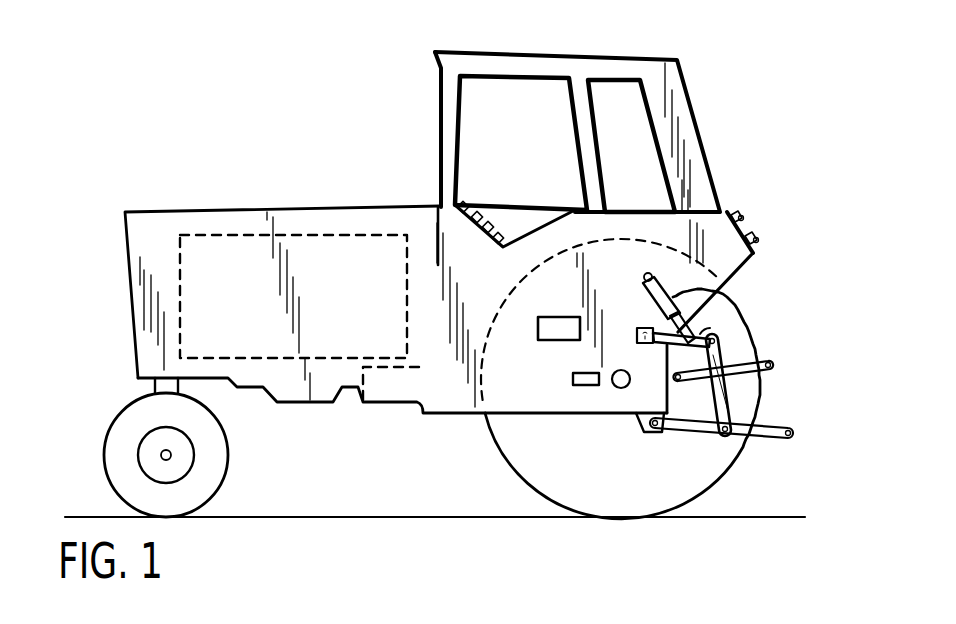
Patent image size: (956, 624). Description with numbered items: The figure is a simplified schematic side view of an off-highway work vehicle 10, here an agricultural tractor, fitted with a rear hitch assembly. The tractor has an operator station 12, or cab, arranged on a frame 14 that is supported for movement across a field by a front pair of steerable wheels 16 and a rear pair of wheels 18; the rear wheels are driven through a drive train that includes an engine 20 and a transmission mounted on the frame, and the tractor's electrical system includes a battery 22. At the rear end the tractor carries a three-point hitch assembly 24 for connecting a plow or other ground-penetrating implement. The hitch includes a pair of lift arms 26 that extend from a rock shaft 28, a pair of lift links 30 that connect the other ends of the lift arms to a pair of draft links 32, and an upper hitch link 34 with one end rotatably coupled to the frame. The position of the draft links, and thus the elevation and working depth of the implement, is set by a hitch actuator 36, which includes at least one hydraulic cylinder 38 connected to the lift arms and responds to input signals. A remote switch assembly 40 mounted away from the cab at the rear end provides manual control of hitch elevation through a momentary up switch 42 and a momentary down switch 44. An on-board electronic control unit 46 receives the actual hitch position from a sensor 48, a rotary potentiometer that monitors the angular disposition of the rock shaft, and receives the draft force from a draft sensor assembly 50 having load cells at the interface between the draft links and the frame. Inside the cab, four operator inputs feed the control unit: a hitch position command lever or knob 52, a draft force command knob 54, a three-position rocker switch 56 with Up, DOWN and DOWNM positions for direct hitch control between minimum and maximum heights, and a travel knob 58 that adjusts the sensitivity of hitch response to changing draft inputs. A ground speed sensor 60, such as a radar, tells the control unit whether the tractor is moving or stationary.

The off-highway work vehicle 10 is at (227, 198).
The operator station 12 is at (547, 92).
The frame 14 is at (432, 353).
The front pair of steerable wheels 16 is at (123, 427).
The rear pair of wheels 18 is at (720, 467).
The engine 20 is at (330, 245).
The battery 22 is at (377, 389).
The hitch assembly 24 is at (740, 349).
The lift arms 26 is at (712, 326).
The rock shaft 28 is at (634, 379).
The lift links 30 is at (727, 393).
The draft links 32 is at (786, 425).
The upper hitch link 34 is at (773, 367).
The hitch actuator 36 is at (673, 280).
The hydraulic cylinder 38 is at (700, 292).
The remote switch assembly 40 is at (760, 221).
The remote momentary up switch 42 is at (742, 217).
The remote momentary down switch 44 is at (758, 241).
The electronic control unit 46 is at (538, 326).
The position sensor 48 is at (640, 329).
The draft sensor assembly 50 is at (663, 432).
The hitch position command lever 52 is at (465, 204).
The draft force command knob 54 is at (480, 215).
The three-position rocker switch 56 is at (491, 228).
The travel knob 58 is at (503, 238).
The ground speed sensor 60 is at (573, 379).